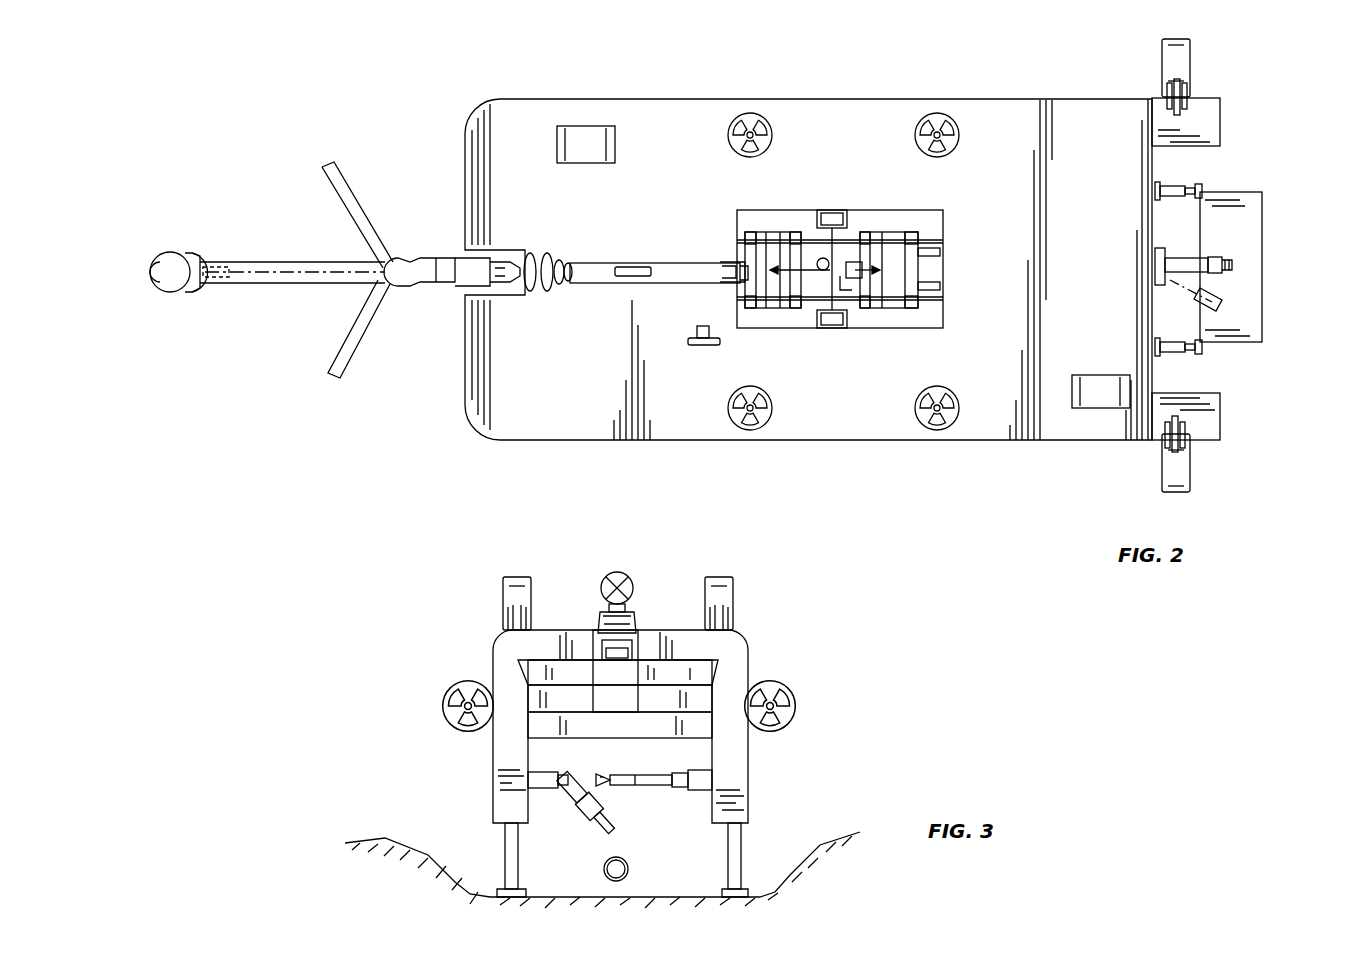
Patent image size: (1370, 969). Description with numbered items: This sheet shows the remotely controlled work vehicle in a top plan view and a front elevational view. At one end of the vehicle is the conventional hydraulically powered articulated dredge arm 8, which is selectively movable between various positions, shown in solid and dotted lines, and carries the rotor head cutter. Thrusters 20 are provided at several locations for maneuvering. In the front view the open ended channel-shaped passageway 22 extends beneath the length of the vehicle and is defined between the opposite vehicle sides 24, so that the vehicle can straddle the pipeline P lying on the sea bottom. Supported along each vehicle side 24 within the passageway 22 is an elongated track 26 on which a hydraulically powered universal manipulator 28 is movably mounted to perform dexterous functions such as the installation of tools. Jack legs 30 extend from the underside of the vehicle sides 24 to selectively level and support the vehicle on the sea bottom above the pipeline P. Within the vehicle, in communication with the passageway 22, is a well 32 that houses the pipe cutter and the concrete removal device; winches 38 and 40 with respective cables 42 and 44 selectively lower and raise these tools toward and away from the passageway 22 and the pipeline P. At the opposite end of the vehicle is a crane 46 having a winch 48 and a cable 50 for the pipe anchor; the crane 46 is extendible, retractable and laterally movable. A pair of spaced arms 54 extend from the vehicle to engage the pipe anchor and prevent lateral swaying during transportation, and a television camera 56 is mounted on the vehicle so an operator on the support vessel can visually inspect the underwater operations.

In FIG. 2, the articulated dredge arm 8 is at (257, 302).
In FIG. 3, the articulated dredge arm 8 is at (630, 572).
In FIG. 2, the thrusters 20 is at (1200, 58).
In FIG. 3, the thrusters 20 is at (738, 590).
In FIG. 3, the channel-shaped passageway 22 is at (655, 800).
In FIG. 3, the vehicle sides 24 is at (623, 726).
In FIG. 3, the elongated track 26 is at (525, 772).
In FIG. 3, the universal manipulator 28 is at (652, 770).
In FIG. 3, the jack legs 30 is at (504, 862).
In FIG. 2, the well 32 is at (948, 314).
In FIG. 2, the winch 38 is at (833, 209).
In FIG. 2, the winch 40 is at (832, 328).
In FIG. 2, the cable 42 is at (788, 262).
In FIG. 2, the cable 44 is at (870, 262).
In FIG. 2, the crane 46 is at (1212, 280).
In FIG. 2, the winch 48 is at (1172, 265).
In FIG. 2, the cable 50 is at (1205, 258).
In FIG. 2, the spaced arms 54 is at (1180, 190).
In FIG. 2, the television cameras 56 is at (637, 266).
In FIG. 3, the pipeline P is at (630, 870).